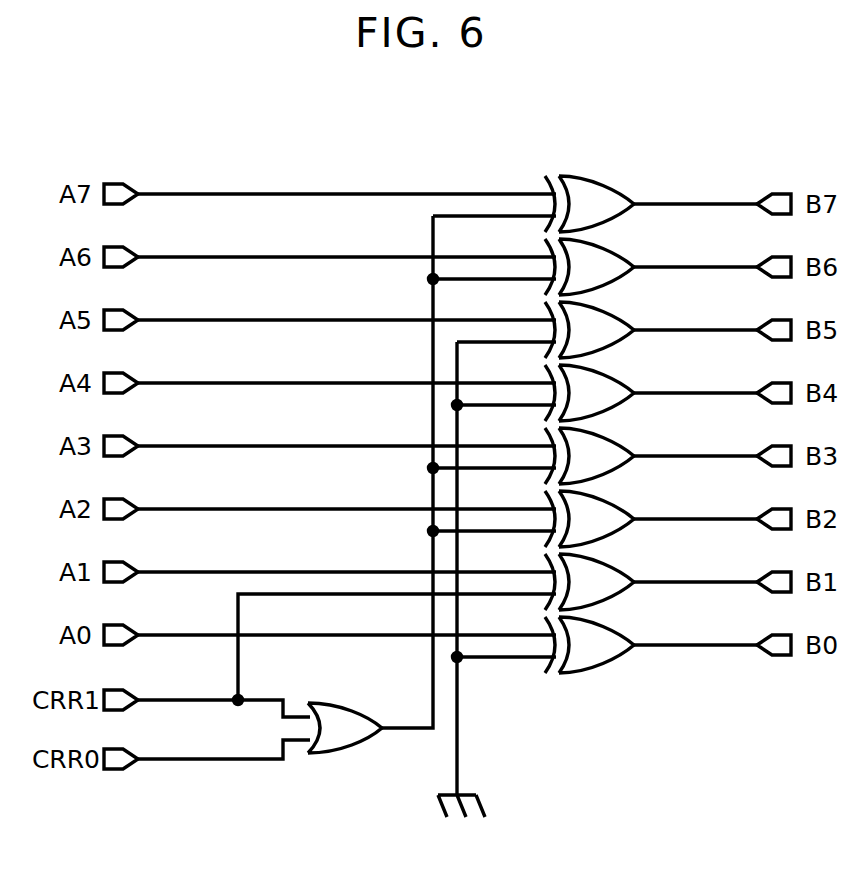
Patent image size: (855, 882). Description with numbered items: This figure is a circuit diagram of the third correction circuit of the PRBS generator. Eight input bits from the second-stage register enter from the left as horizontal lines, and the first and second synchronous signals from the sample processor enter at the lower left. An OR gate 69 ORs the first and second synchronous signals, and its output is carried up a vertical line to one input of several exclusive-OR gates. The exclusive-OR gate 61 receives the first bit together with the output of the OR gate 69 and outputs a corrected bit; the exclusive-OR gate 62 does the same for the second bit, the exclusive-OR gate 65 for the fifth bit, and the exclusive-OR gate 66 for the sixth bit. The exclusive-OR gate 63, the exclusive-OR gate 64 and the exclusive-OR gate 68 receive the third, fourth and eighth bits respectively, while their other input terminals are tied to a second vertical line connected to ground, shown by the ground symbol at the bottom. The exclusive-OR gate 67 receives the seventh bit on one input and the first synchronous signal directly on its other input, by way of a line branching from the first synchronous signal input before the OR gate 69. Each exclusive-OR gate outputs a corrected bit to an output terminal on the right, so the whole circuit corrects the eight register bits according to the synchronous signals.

The exclusive-OR gate 61 is at (589, 204).
The exclusive-OR gate 62 is at (589, 267).
The exclusive-OR gate 63 is at (589, 330).
The exclusive-OR gate 64 is at (589, 393).
The exclusive-OR gate 65 is at (589, 456).
The exclusive-OR gate 66 is at (589, 519).
The exclusive-OR gate 67 is at (589, 582).
The exclusive-OR gate 68 is at (589, 645).
The OR gate 69 is at (345, 728).